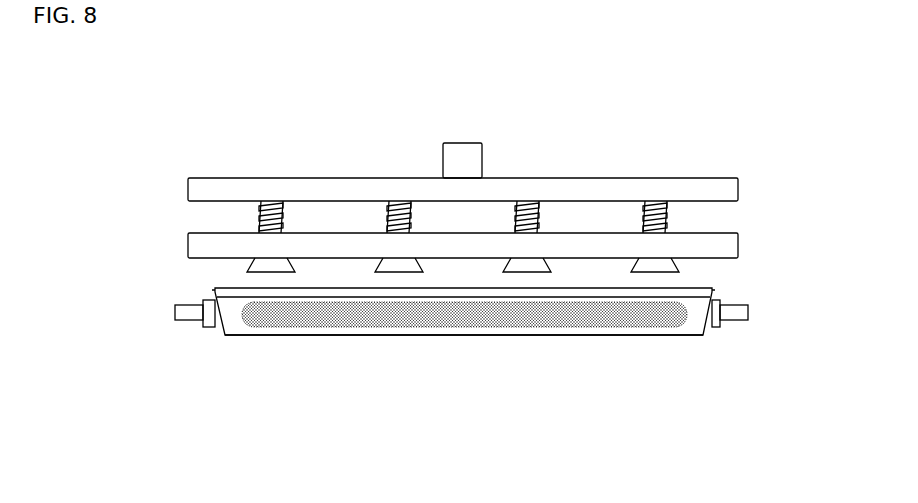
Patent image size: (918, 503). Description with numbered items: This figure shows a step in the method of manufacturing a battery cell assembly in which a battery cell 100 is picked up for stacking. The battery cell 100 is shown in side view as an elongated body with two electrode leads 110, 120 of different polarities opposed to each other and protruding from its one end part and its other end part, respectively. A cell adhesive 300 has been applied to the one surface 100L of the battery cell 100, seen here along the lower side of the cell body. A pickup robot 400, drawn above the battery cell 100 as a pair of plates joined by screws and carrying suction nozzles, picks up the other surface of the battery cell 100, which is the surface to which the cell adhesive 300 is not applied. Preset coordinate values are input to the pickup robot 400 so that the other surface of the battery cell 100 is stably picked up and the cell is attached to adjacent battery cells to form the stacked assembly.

The pickup robot 400 is at (572, 180).
The battery cell 100 is at (385, 338).
The electrode lead 110 is at (175, 313).
The electrode lead 120 is at (748, 312).
The cell adhesive 300 is at (597, 315).
The one surface of the battery cell 100L is at (242, 330).